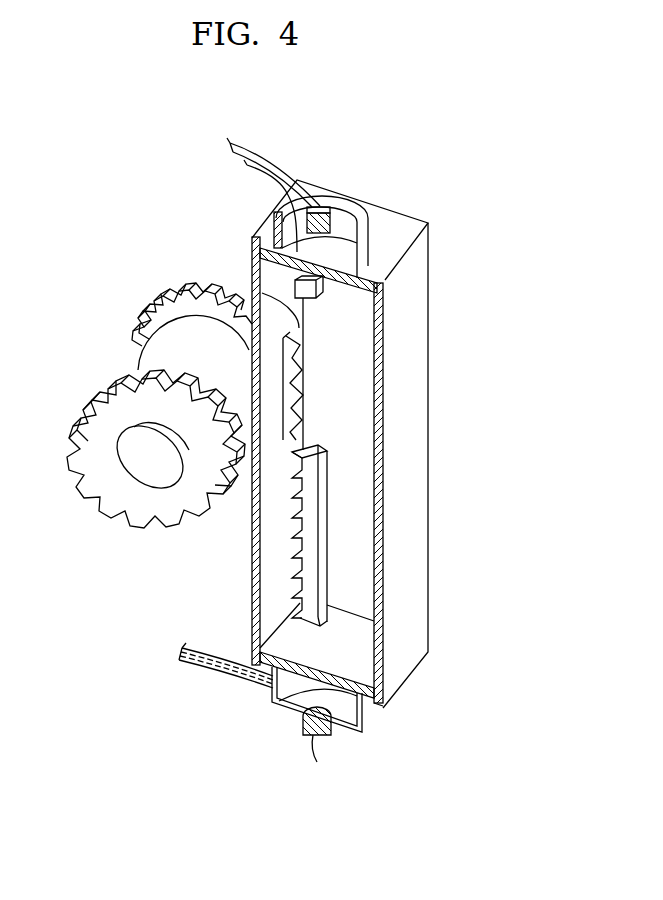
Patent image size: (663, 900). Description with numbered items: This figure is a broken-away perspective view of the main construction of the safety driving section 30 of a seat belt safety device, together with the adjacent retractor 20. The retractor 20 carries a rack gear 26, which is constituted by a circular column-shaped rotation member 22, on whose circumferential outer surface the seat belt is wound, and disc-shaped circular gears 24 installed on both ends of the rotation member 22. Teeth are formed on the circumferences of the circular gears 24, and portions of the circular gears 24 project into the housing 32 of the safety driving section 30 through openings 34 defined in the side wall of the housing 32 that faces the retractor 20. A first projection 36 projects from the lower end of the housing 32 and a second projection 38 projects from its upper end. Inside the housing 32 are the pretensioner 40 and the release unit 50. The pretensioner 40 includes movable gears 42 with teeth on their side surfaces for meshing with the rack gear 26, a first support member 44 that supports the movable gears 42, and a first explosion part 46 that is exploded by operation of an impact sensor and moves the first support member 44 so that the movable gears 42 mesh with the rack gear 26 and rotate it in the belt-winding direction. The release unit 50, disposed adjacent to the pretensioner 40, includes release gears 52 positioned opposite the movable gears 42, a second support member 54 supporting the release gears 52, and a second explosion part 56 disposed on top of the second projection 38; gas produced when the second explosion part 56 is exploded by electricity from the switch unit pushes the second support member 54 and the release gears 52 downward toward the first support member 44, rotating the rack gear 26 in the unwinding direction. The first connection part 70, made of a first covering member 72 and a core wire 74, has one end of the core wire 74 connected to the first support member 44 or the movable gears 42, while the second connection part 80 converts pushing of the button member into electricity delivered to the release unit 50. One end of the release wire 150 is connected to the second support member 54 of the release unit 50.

The retractor 20 is at (136, 384).
The rotation member 22 is at (150, 371).
The circular gears 24 is at (135, 439).
The rack gear 26 is at (136, 405).
The safety driving section 30 is at (374, 453).
The housing 32 is at (398, 410).
The openings 34 is at (253, 297).
The first projection 36 is at (360, 710).
The second projection 38 is at (347, 218).
The pretensioner 40 is at (382, 535).
The movable gears 42 is at (305, 537).
The first support member 44 is at (358, 663).
The first explosion part 46 is at (322, 708).
The release unit 50 is at (325, 296).
The release gears 52 is at (368, 287).
The second support member 54 is at (348, 256).
The second explosion part 56 is at (322, 200).
The first connection part 70 is at (248, 715).
The first covering member 72 is at (233, 684).
The core wire 74 is at (288, 735).
The second connection part 80 is at (284, 146).
The release wire 150 is at (276, 183).